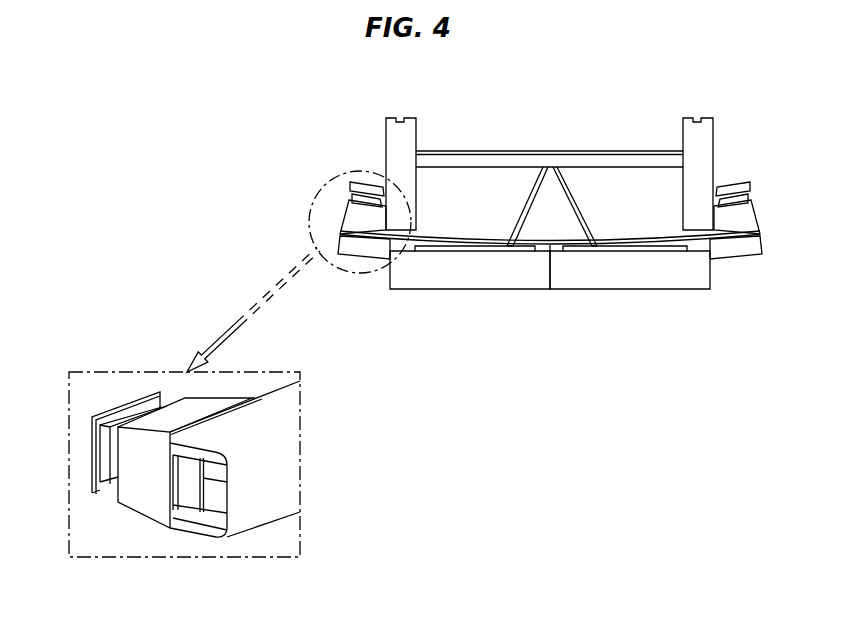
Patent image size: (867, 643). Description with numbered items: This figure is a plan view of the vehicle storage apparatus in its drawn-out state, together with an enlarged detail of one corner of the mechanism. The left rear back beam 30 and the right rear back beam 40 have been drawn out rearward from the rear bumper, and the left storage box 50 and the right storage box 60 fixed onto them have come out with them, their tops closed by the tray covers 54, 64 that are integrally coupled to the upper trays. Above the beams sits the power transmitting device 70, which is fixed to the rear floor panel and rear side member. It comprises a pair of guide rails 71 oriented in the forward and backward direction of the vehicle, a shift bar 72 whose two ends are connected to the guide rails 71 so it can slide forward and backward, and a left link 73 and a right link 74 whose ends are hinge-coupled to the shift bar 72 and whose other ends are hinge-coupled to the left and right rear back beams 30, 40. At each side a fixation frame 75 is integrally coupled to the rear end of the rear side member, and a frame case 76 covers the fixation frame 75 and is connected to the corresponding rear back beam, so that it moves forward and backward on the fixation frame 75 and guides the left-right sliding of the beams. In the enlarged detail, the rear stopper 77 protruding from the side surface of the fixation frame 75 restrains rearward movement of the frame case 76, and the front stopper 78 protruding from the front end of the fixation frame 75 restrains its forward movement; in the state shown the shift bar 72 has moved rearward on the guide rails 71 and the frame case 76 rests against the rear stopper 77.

The left rear back beam 30 is at (378, 258).
The right rear back beam 40 is at (742, 250).
The left storage box 50 is at (447, 293).
The tray cover 54 is at (482, 270).
The right storage box 60 is at (610, 305).
The tray cover 64 is at (659, 277).
The power transmitting device 70 is at (545, 158).
The guide rail 71 is at (393, 142).
The shift bar 72 is at (539, 160).
The left link 73 is at (529, 192).
The right link 74 is at (570, 192).
The fixation frame 75 is at (348, 190).
The frame case 76 is at (362, 224).
The rear stopper 77 is at (177, 488).
The front stopper 78 is at (95, 442).